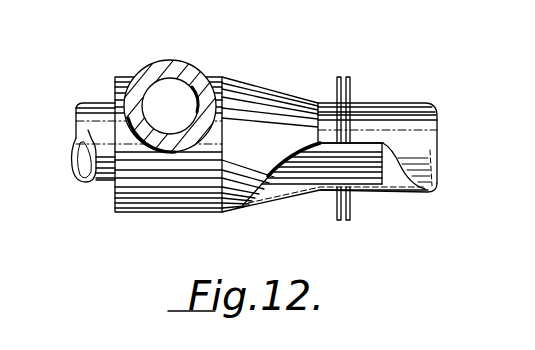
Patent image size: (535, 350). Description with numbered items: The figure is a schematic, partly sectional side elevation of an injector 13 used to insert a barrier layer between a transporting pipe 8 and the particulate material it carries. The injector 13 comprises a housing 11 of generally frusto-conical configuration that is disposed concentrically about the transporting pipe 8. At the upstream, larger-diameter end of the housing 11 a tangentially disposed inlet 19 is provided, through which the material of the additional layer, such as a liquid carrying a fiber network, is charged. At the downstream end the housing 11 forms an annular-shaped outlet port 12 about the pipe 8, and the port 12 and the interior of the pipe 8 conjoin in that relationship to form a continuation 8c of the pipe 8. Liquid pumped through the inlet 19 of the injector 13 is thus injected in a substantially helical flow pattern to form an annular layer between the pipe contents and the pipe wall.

The transporting pipe 8 is at (87, 108).
The continuation of the pipe 8c is at (387, 117).
The housing 11 is at (268, 118).
The annular-shaped outlet port 12 is at (418, 229).
The injector 13 is at (250, 212).
The tangentially disposed inlet 19 is at (167, 59).